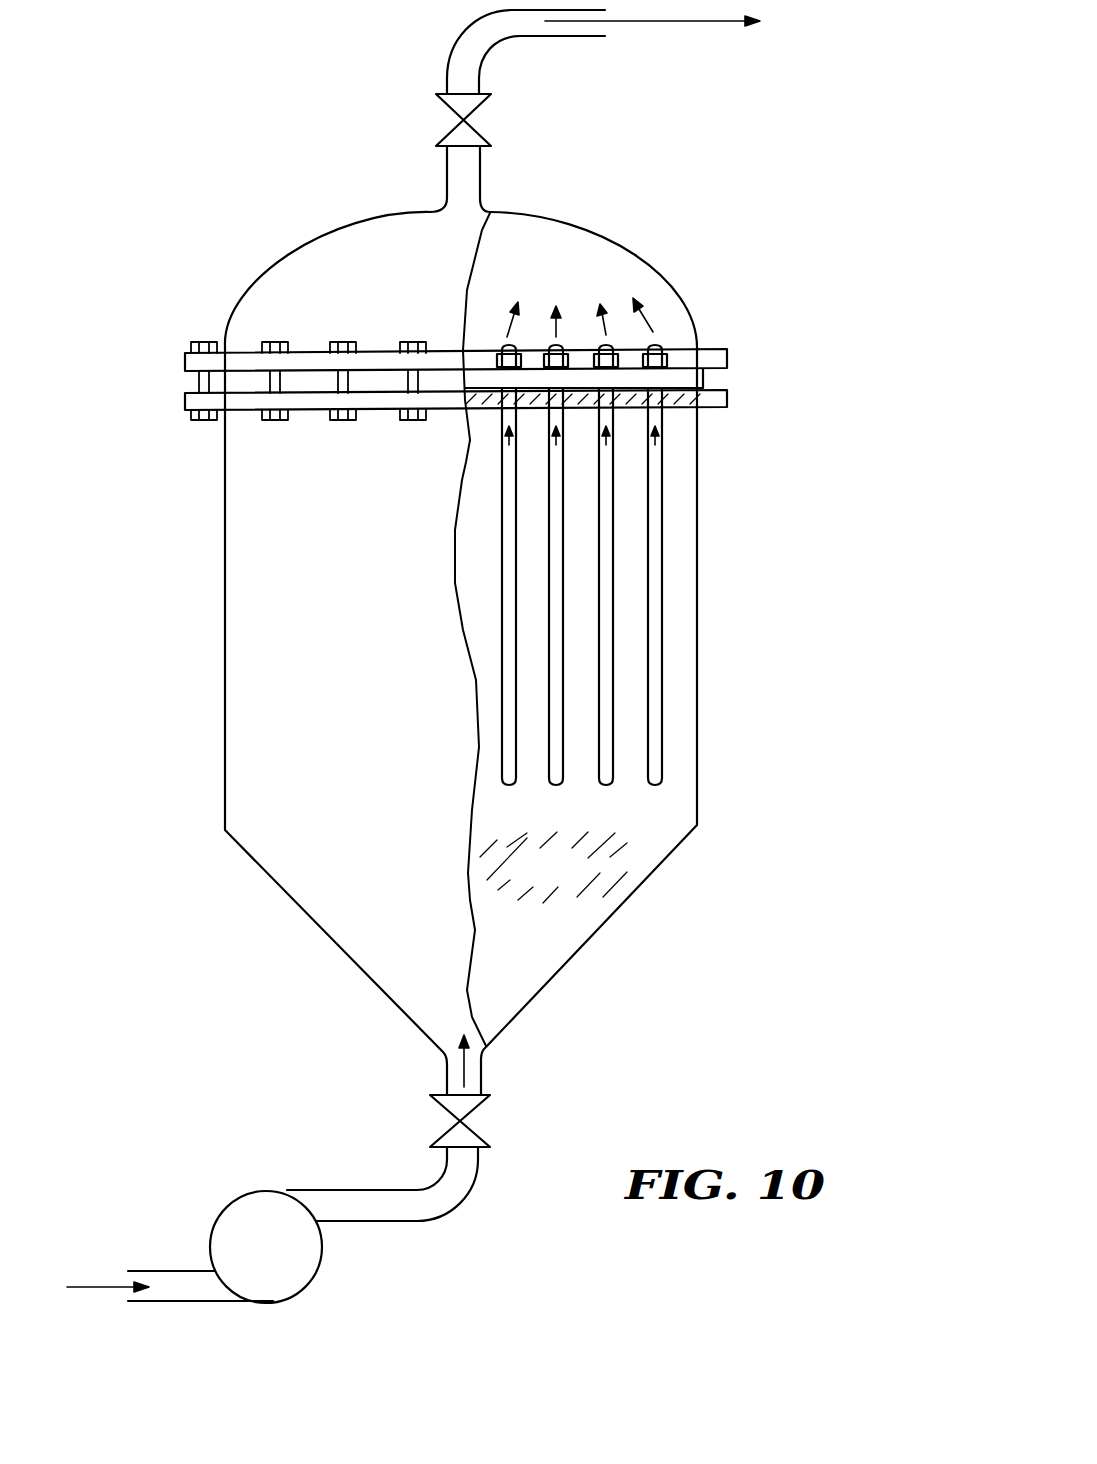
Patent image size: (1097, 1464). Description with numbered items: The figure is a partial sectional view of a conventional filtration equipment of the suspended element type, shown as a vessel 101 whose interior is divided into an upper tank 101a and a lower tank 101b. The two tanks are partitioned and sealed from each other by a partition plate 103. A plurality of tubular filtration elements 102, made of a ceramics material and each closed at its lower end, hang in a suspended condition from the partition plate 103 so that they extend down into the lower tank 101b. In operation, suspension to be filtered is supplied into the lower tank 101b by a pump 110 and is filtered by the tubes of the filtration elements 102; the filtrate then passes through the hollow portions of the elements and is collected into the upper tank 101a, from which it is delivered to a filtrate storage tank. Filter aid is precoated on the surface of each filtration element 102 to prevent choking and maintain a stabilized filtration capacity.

The treatment vessel 101 is at (312, 186).
The upper tank 101a is at (236, 300).
The lower tank 101b is at (225, 662).
The tubular filtration elements 102 is at (507, 642).
The partition plate 103 is at (693, 380).
The pump 110 is at (233, 1202).